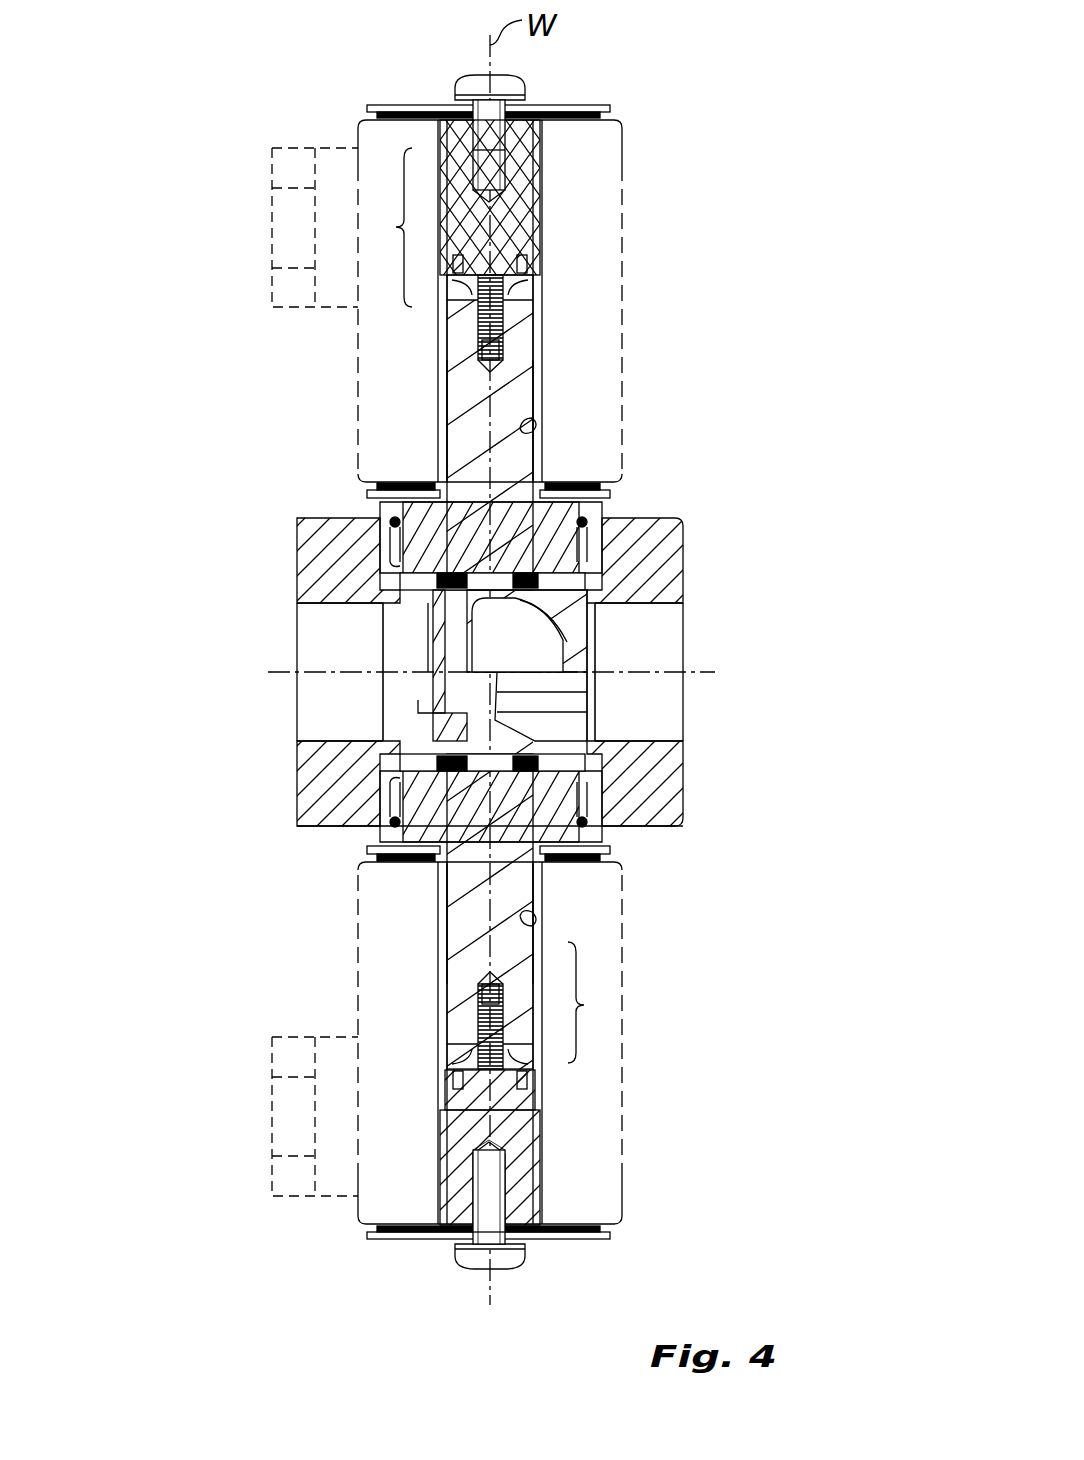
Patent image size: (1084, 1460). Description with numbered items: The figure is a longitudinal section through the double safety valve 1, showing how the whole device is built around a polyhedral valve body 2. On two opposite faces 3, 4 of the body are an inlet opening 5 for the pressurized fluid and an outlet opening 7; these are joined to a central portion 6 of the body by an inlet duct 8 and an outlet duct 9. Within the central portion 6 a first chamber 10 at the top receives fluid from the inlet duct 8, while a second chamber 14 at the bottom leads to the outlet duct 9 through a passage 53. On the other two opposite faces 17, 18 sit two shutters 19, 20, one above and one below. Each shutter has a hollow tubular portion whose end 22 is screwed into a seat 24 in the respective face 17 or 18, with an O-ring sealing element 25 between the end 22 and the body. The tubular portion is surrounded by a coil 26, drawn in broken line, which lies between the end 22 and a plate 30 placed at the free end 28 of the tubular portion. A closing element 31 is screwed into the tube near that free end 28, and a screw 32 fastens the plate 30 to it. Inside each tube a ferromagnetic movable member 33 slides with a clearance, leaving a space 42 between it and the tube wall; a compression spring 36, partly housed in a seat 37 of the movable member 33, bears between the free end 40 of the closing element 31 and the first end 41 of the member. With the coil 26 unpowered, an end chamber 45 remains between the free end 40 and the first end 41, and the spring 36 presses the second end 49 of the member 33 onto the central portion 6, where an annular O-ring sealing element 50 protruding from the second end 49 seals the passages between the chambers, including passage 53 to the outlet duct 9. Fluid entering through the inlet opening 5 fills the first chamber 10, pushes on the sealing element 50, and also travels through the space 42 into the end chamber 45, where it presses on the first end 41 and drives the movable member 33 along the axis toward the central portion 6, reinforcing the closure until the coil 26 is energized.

The double safety valve 1 is at (757, 98).
The valve body 2 is at (262, 495).
The face 3 is at (297, 800).
The face 4 is at (683, 803).
The inlet opening 5 is at (297, 718).
The central portion 6 is at (398, 628).
The outlet opening 7 is at (640, 690).
The inlet duct 8 is at (360, 652).
The outlet duct 9 is at (620, 630).
The first chamber 10 is at (440, 583).
The second chamber 14 is at (432, 758).
The face 17 is at (372, 518).
The face 18 is at (664, 828).
The shutter 19 is at (394, 227).
The shutter 20 is at (584, 1005).
The end 22 is at (598, 492).
The seat 24 is at (398, 582).
The sealing element 25 is at (588, 523).
The coil 26 is at (628, 378).
The free end 28 is at (545, 148).
The plate 30 is at (605, 108).
The closing element 31 is at (548, 187).
The screw 32 is at (478, 82).
The movable member 33 is at (462, 396).
The compression spring 36 is at (492, 348).
The seat 37 is at (478, 318).
The free end 40 is at (458, 300).
The first end 41 is at (530, 278).
The space 42 is at (540, 425).
The end chamber 45 is at (510, 283).
The second end 49 is at (482, 580).
The sealing element 50 is at (542, 580).
The passage 53 is at (510, 735).